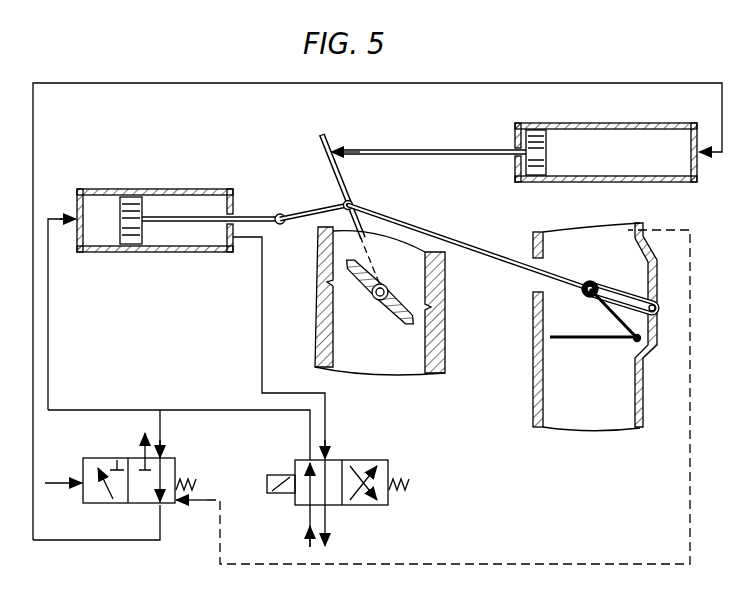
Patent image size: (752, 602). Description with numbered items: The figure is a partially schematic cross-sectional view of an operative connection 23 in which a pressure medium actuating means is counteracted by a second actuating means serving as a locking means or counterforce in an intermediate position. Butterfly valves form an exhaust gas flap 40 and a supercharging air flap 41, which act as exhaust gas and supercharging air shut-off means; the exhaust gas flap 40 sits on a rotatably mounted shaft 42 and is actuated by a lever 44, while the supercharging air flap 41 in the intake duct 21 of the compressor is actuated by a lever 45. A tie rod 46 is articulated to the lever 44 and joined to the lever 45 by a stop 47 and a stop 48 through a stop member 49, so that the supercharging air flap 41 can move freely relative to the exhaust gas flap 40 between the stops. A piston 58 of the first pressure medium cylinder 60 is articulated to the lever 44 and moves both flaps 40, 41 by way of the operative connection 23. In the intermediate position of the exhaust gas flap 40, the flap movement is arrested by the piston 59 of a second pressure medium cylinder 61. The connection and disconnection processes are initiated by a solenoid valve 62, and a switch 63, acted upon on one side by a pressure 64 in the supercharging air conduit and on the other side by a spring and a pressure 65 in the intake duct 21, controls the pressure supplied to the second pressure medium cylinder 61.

The intake duct 21 is at (583, 260).
The operative connection 23 is at (492, 243).
The exhaust gas flap 40 is at (397, 320).
The supercharging air flap 41 is at (567, 340).
The shaft 42 is at (386, 285).
The lever 44 is at (352, 183).
The lever 45 is at (615, 333).
The tie rod 46 is at (463, 238).
The stop 47 is at (541, 295).
The stop 48 is at (656, 305).
The stop member 49 is at (597, 283).
The piston 58 is at (128, 240).
The piston 59 is at (546, 153).
The first pressure medium cylinder 60 is at (178, 206).
The second pressure medium cylinder 61 is at (656, 167).
The solenoid valve 62 is at (356, 456).
The switch 63 is at (112, 455).
The pressure in the supercharging air conduit 64 is at (52, 484).
The pressure in the intake duct 65 is at (216, 505).